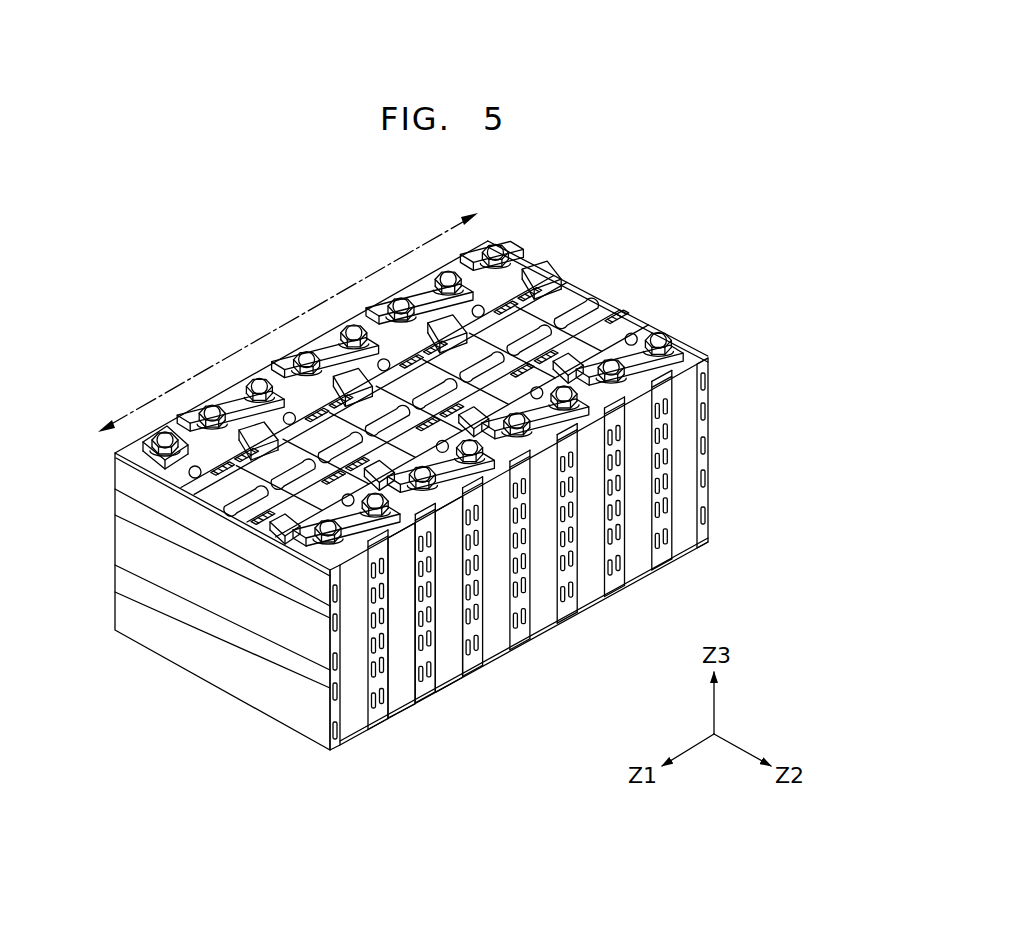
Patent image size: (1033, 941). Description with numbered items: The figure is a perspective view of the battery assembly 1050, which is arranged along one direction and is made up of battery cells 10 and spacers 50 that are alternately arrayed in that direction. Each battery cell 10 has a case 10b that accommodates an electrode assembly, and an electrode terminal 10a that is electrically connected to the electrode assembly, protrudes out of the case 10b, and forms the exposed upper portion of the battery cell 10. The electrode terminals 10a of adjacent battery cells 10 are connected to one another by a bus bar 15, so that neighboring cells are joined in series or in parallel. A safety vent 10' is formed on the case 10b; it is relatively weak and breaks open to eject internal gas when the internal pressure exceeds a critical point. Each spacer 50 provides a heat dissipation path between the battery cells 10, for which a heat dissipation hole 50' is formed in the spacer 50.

The battery cell 10 is at (487, 623).
The safety vent 10' is at (580, 287).
The electrode terminal 10a is at (663, 335).
The case 10b is at (402, 698).
The bus bar 15 is at (423, 285).
The spacer 50 is at (260, 630).
The heat dissipation hole 50' is at (408, 657).
The battery assembly 1050 is at (288, 322).